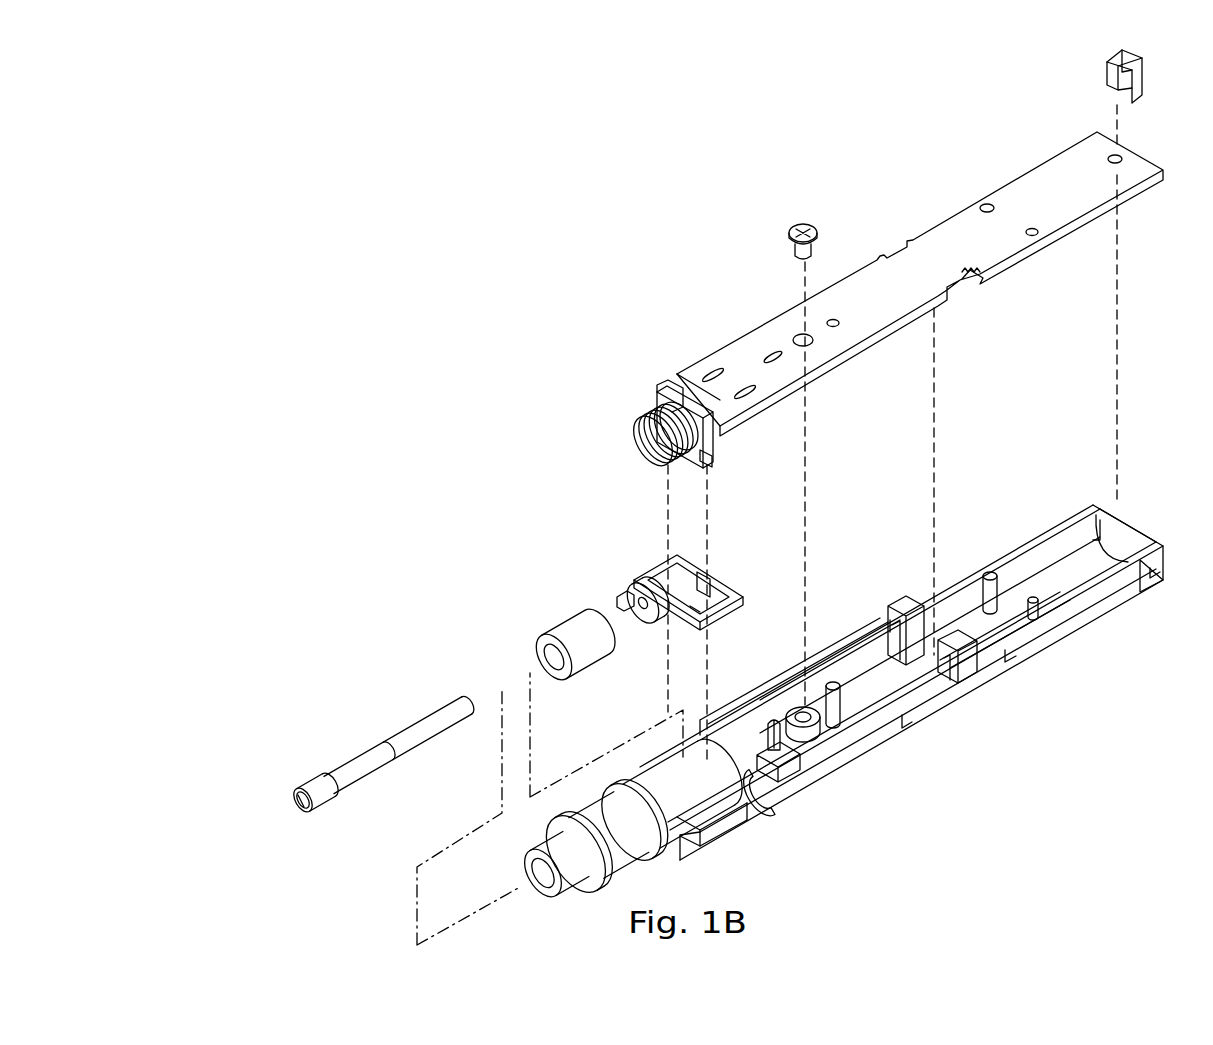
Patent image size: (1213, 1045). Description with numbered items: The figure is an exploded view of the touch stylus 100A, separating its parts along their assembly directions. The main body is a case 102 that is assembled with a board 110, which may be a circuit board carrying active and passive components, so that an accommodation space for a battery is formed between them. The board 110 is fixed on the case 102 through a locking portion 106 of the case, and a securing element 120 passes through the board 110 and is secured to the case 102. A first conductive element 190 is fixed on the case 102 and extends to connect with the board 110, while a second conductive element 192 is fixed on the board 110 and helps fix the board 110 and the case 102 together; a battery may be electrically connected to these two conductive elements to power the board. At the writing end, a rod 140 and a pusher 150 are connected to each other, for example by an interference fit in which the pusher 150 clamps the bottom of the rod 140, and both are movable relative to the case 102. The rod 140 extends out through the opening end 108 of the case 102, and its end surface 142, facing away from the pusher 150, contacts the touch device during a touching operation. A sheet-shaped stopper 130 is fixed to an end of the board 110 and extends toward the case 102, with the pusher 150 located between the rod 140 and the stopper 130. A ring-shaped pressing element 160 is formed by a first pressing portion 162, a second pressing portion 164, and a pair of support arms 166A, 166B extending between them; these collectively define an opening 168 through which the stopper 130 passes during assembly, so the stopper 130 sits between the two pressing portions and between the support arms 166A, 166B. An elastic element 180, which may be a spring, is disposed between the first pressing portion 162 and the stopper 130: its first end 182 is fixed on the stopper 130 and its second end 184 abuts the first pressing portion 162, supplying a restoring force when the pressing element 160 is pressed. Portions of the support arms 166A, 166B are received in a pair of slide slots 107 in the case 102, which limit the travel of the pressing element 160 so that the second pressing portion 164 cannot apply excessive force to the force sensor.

The touch stylus 100A is at (207, 57).
The case 102 is at (1110, 598).
The locking portion 106 is at (903, 600).
The slide slots 107 is at (728, 826).
The opening end 108 is at (522, 874).
The board 110 is at (1028, 190).
The securing element 120 is at (805, 222).
The stopper 130 is at (689, 393).
The rod 140 is at (352, 767).
The end surface 142 is at (282, 795).
The pusher 150 is at (570, 630).
The pressing element 160 is at (576, 564).
The first pressing portion 162 is at (628, 592).
The second pressing portion 164 is at (648, 580).
The support arm 166A is at (696, 590).
The support arm 166B is at (712, 578).
The opening 168 is at (683, 604).
The elastic element 180 is at (588, 406).
The first end 182 is at (665, 390).
The second end 184 is at (640, 433).
The first conductive element 190 is at (772, 720).
The second conductive element 192 is at (1130, 52).